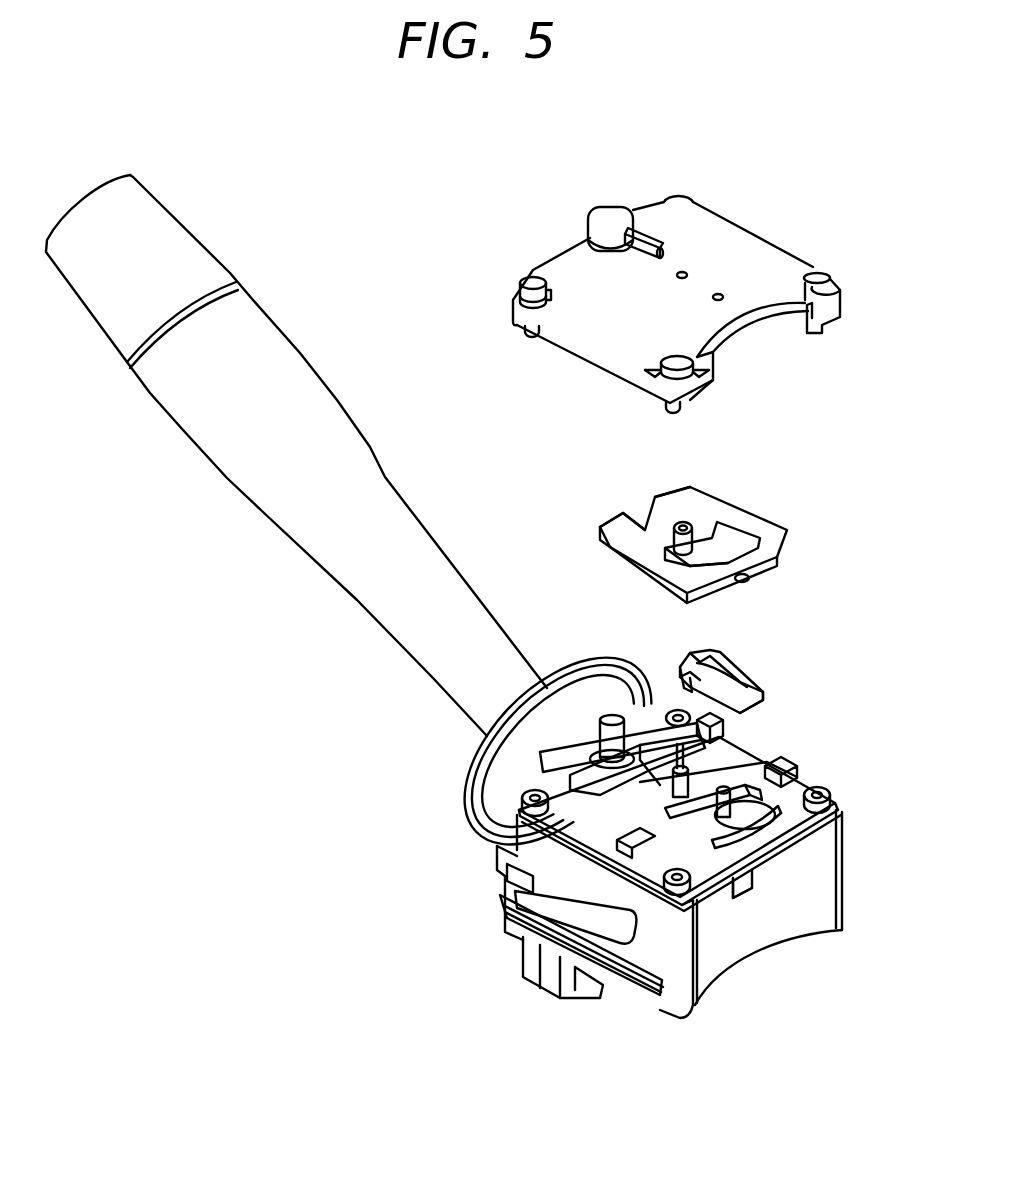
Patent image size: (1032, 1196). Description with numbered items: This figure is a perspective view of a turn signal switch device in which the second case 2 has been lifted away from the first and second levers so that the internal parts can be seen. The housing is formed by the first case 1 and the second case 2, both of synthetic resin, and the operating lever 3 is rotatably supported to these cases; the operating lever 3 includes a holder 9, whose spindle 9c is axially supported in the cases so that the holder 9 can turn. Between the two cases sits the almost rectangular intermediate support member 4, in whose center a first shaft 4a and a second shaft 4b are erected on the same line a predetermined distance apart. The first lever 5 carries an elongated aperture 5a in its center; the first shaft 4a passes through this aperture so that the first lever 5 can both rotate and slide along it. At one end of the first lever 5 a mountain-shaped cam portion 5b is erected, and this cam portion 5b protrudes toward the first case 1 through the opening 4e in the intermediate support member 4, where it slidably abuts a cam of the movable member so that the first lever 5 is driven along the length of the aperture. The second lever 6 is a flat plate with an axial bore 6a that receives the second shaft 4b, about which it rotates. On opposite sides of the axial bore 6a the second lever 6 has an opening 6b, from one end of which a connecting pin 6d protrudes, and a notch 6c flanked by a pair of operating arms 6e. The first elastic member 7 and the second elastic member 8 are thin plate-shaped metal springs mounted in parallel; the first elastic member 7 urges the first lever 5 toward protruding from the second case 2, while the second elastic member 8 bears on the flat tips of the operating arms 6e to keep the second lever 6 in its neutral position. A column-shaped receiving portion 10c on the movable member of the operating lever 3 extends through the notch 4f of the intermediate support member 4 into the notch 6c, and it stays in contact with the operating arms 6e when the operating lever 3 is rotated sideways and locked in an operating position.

The first case 1 is at (848, 862).
The second case 2 is at (769, 231).
The operating lever 3 is at (415, 651).
The intermediate support member 4 is at (500, 848).
The first shaft 4a is at (765, 828).
The second shaft 4b is at (790, 778).
The opening 4e is at (738, 893).
The notch 4f is at (517, 913).
The first lever 5 is at (749, 673).
The elongated aperture 5a is at (757, 680).
The cam portion 5b is at (688, 690).
The second lever 6 is at (778, 507).
The axial bore 6a is at (686, 521).
The opening 6b is at (688, 563).
The notch 6c is at (645, 520).
The connecting pin 6d is at (748, 580).
The operating arms 6e is at (682, 496).
The first elastic member 7 is at (625, 790).
The second elastic member 8 is at (575, 782).
The holder 9 is at (578, 760).
The spindle 9c is at (605, 735).
The receiving portion 10c is at (720, 748).